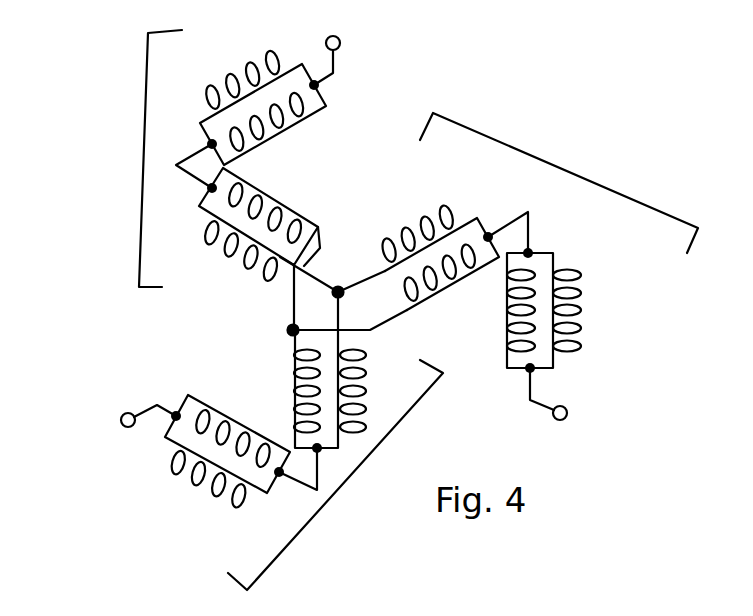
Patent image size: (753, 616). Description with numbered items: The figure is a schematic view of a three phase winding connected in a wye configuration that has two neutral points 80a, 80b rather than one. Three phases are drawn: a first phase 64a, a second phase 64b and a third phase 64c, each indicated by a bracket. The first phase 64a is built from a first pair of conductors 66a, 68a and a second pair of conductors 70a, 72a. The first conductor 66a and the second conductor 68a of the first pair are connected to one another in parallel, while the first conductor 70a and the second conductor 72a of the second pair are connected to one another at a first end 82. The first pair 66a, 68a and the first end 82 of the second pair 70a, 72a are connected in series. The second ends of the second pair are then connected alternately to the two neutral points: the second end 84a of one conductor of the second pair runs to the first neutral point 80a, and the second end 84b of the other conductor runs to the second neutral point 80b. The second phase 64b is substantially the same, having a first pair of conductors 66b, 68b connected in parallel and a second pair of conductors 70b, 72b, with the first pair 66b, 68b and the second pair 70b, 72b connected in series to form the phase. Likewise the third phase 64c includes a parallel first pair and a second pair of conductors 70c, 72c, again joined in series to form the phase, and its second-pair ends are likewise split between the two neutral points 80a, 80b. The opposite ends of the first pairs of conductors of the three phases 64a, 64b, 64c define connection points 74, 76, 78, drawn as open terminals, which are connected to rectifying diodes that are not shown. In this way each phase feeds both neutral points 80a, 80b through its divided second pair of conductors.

The first phase 64a is at (139, 163).
The second phase 64b is at (577, 177).
The third phase 64c is at (290, 547).
The first conductor of first pair 66a is at (250, 68).
The second conductor of first pair 68a is at (250, 117).
The first conductor of second pair 70a is at (235, 240).
The second conductor of second pair 72a is at (245, 256).
The first conductor of first pair 66b is at (580, 290).
The second conductor of first pair 68b is at (556, 340).
The first conductor of second pair 70b is at (440, 207).
The second conductor of second pair 72b is at (397, 230).
The first conductor of second pair 70c is at (365, 353).
The second conductor of second pair 72c is at (320, 417).
The connection point 74 is at (341, 39).
The connection point 76 is at (558, 421).
The connection point 78 is at (125, 428).
The first neutral point 80a is at (288, 331).
The second neutral point 80b is at (340, 284).
The first end 82 is at (177, 183).
The second end 84a is at (292, 302).
The second end 84b is at (322, 228).